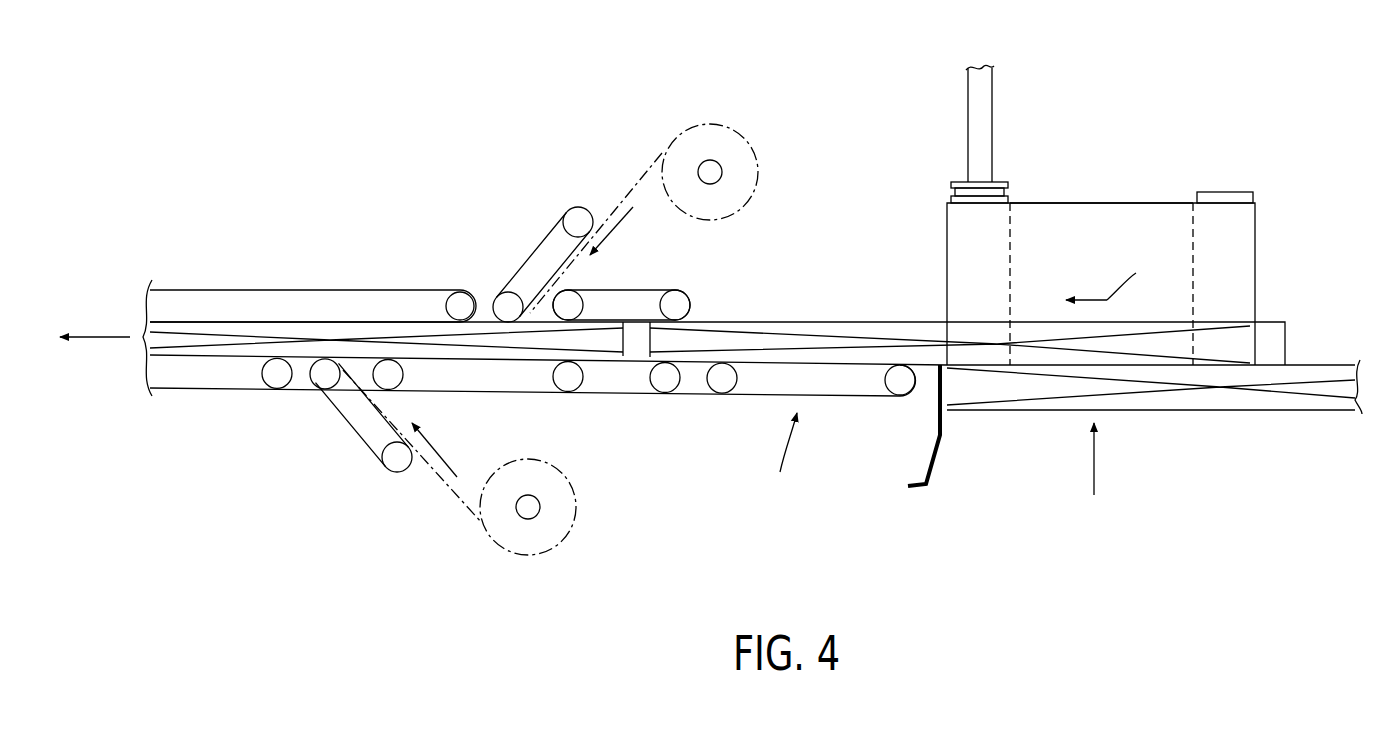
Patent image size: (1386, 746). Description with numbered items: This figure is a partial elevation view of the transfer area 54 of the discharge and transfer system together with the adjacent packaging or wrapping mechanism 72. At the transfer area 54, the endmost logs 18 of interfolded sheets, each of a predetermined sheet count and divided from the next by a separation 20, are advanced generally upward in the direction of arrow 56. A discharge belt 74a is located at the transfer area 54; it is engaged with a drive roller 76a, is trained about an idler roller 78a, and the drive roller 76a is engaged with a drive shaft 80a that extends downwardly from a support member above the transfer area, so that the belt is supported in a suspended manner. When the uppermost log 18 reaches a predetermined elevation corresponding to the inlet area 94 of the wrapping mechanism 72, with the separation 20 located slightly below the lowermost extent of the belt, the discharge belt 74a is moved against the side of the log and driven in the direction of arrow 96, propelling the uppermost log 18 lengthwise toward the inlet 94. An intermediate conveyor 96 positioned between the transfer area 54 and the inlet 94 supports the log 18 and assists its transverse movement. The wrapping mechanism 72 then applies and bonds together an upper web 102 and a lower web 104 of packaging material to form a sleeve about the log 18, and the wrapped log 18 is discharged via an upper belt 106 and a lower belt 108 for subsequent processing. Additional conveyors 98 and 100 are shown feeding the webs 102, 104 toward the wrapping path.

The log 18 is at (362, 330).
The separation 20 is at (1285, 370).
The transfer area 54 is at (1278, 300).
The arrow 56 is at (1094, 480).
The packaging or wrapping mechanism 72 is at (436, 222).
The discharge belt 74a is at (1151, 203).
The drive roller 76a is at (950, 182).
The idler roller 78a is at (1255, 197).
The drive shaft 80a is at (992, 127).
The inlet area 94 is at (698, 313).
The intermediate conveyor 96 is at (963, 377).
The inclined upper conveyor 98 is at (627, 277).
The inclined lower conveyor 100 is at (567, 403).
The upper web 102 is at (628, 191).
The lower web 104 is at (443, 478).
The upper belt 106 is at (220, 276).
The lower belt 108 is at (207, 402).